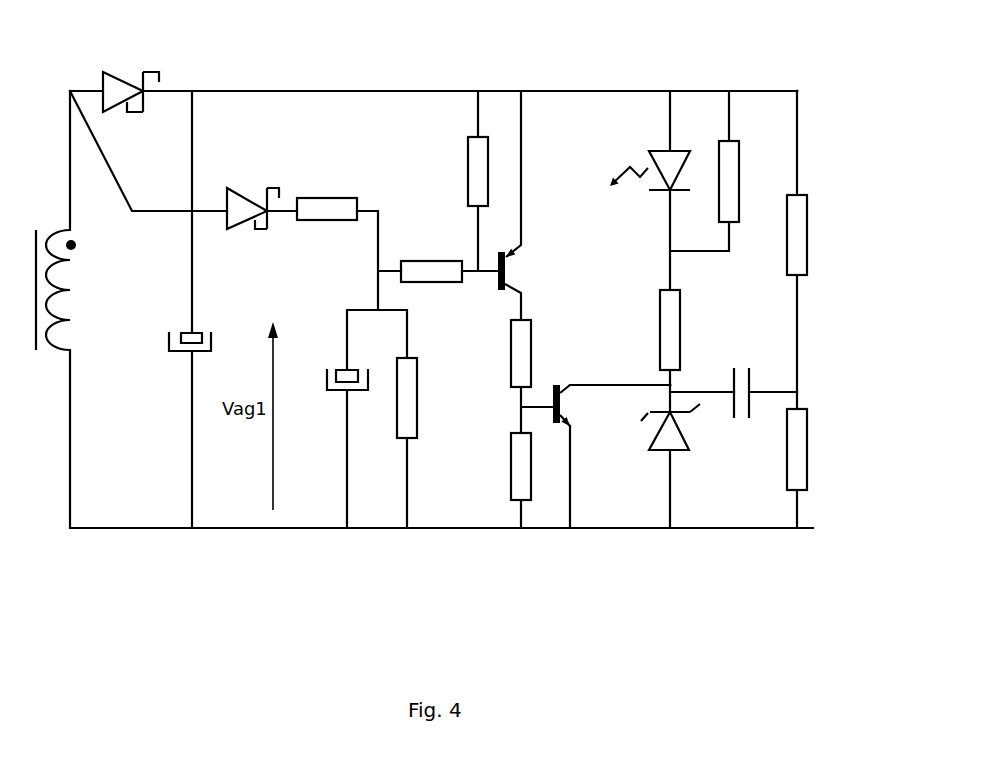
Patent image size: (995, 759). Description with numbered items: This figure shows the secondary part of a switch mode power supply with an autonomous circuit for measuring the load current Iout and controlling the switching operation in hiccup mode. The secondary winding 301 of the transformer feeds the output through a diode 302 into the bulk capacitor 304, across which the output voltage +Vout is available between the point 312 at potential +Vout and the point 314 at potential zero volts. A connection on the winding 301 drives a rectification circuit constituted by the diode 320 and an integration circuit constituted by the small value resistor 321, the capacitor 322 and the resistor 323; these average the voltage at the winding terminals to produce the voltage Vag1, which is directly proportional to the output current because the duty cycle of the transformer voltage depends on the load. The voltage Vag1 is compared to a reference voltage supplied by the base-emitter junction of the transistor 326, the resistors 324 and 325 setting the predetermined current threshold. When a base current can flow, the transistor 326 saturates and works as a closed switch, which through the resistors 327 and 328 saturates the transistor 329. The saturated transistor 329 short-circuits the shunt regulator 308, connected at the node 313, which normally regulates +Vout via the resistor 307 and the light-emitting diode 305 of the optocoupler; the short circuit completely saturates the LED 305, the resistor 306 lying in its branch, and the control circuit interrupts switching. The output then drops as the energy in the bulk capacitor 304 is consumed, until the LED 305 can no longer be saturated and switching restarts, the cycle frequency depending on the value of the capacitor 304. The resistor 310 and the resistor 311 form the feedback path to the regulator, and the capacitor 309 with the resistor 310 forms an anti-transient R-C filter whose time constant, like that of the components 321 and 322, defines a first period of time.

The secondary winding 301 is at (53, 300).
The output Schottky diode 302 is at (115, 85).
The bulk capacitor 304 is at (193, 338).
The light-emitting diode of the optocoupler 305 is at (670, 170).
The resistor 306 is at (728, 217).
The resistor 307 is at (667, 332).
The shunt regulator 308 is at (670, 438).
The capacitor 309 is at (737, 385).
The resistor 310 is at (797, 262).
The feedback divider resistor 311 is at (797, 470).
The point at potential +Vout 312 is at (785, 92).
The feedback node 313 is at (665, 387).
The point at potential 0V 314 is at (742, 528).
The diode 320 is at (243, 200).
The resistor 321 is at (318, 208).
The capacitor 322 is at (343, 378).
The resistor 323 is at (407, 412).
The resistor 324 is at (422, 270).
The resistor 325 is at (478, 190).
The transistor 326 is at (500, 292).
The resistor 327 is at (513, 443).
The resistor 328 is at (518, 345).
The transistor 329 is at (567, 380).